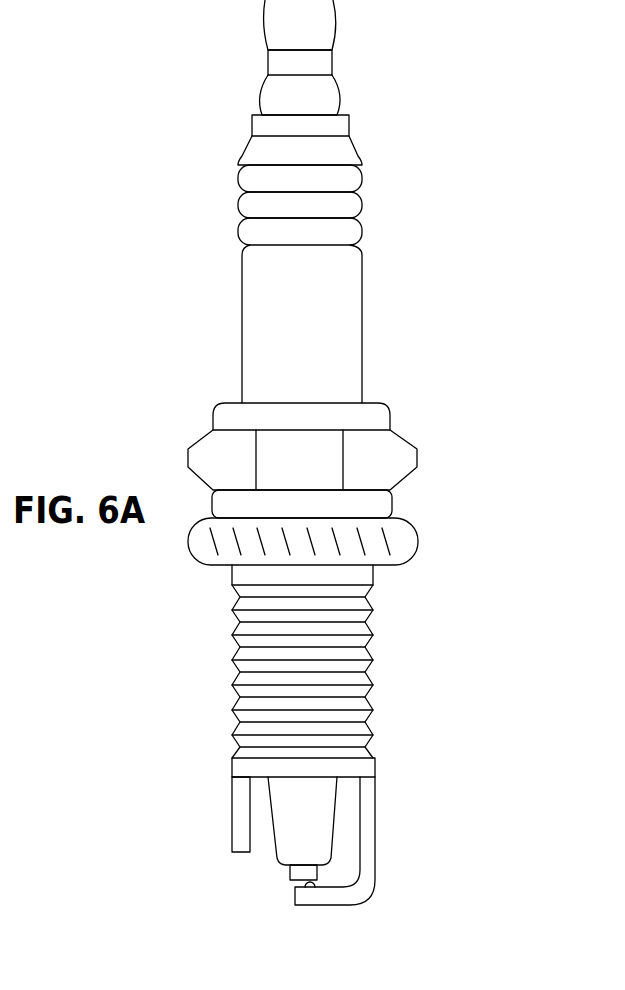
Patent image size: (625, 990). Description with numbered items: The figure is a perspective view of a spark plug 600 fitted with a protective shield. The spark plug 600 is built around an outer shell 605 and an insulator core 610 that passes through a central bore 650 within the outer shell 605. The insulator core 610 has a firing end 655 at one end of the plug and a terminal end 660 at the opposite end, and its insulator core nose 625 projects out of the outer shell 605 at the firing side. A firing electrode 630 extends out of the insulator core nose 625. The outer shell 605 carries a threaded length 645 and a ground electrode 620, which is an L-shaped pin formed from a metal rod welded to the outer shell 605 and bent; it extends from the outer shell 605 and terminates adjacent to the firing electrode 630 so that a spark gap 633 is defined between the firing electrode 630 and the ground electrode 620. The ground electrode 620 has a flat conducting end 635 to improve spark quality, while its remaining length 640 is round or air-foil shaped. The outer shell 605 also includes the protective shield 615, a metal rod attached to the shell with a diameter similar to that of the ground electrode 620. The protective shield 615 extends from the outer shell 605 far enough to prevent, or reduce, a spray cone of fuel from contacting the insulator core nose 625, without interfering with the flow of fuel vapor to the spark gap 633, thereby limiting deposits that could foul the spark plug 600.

The spark plug 600 is at (312, 480).
The outer shell 605 is at (392, 503).
The insulator core 610 is at (362, 313).
The protective shield 615 is at (232, 847).
The ground electrode 620 is at (372, 893).
The insulator core nose 625 is at (337, 816).
The firing electrode 630 is at (325, 878).
The spark gap 633 is at (297, 884).
The conducting end 635 is at (310, 888).
The remaining length 640 is at (389, 868).
The threaded length 645 is at (386, 664).
The central bore 650 is at (363, 402).
The firing end 655 is at (232, 777).
The terminal end 660 is at (252, 123).